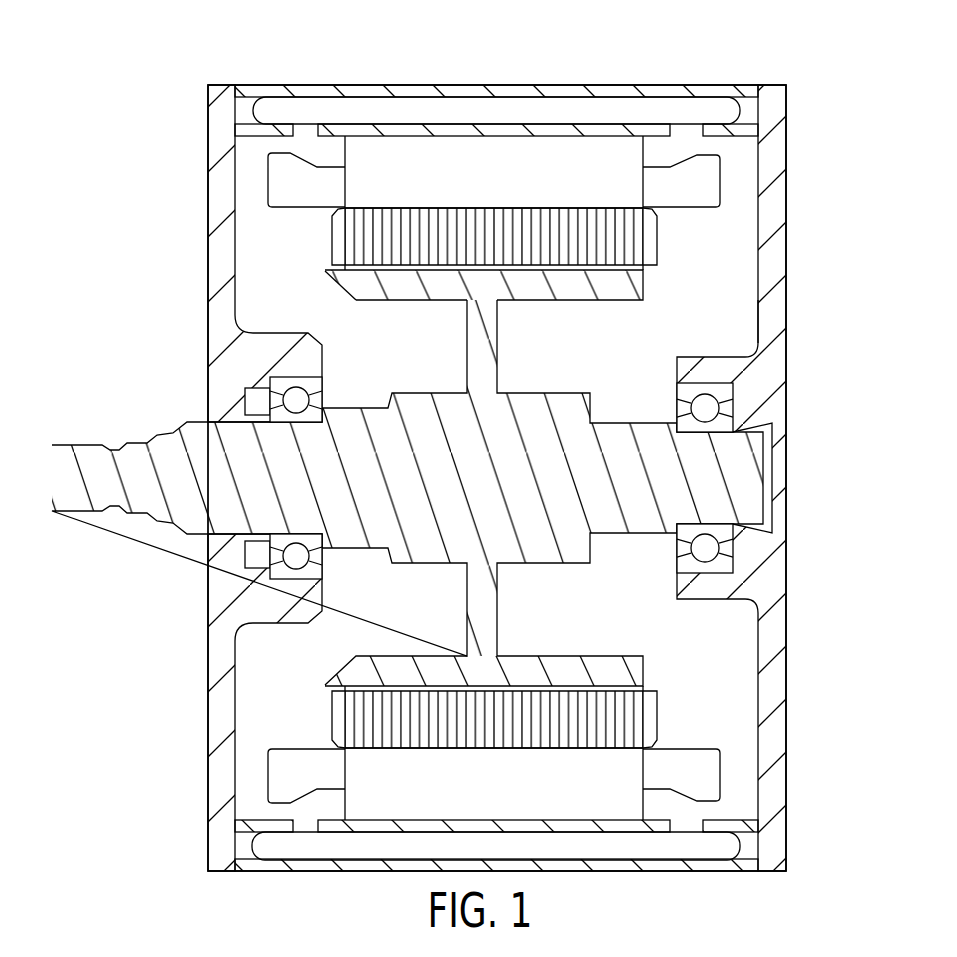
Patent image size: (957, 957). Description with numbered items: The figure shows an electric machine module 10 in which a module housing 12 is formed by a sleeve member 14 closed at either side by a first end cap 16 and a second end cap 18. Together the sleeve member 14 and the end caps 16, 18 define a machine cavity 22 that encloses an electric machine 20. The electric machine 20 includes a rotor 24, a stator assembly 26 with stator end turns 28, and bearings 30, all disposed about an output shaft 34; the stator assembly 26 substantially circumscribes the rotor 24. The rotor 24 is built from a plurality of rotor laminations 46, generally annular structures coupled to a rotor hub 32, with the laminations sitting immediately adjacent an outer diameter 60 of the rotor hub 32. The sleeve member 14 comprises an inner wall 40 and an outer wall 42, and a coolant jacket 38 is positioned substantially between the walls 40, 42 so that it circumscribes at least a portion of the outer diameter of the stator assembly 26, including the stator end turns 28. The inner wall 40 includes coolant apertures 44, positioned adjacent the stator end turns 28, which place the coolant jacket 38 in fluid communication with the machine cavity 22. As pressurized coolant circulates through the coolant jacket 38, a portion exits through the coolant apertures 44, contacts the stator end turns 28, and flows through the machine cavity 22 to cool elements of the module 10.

The electric machine module 10 is at (758, 34).
The module housing 12 is at (262, 85).
The sleeve member 14 is at (752, 85).
The first end cap 16 is at (777, 192).
The second end cap 18 is at (207, 135).
The electric machine 20 is at (660, 273).
The machine cavity 22 is at (725, 325).
The rotor 24 is at (333, 282).
The stator assembly 26 is at (461, 158).
The stator end turns 28 is at (712, 188).
The bearings 30 is at (294, 400).
The rotor hub 32 is at (640, 670).
The output shaft 34 is at (52, 476).
The coolant jacket 38 is at (600, 107).
The inner wall 40 is at (748, 140).
The outer wall 42 is at (562, 84).
The coolant apertures 44 is at (305, 128).
The rotor laminations 46 is at (370, 238).
The outer diameter of the rotor hub 60 is at (370, 690).